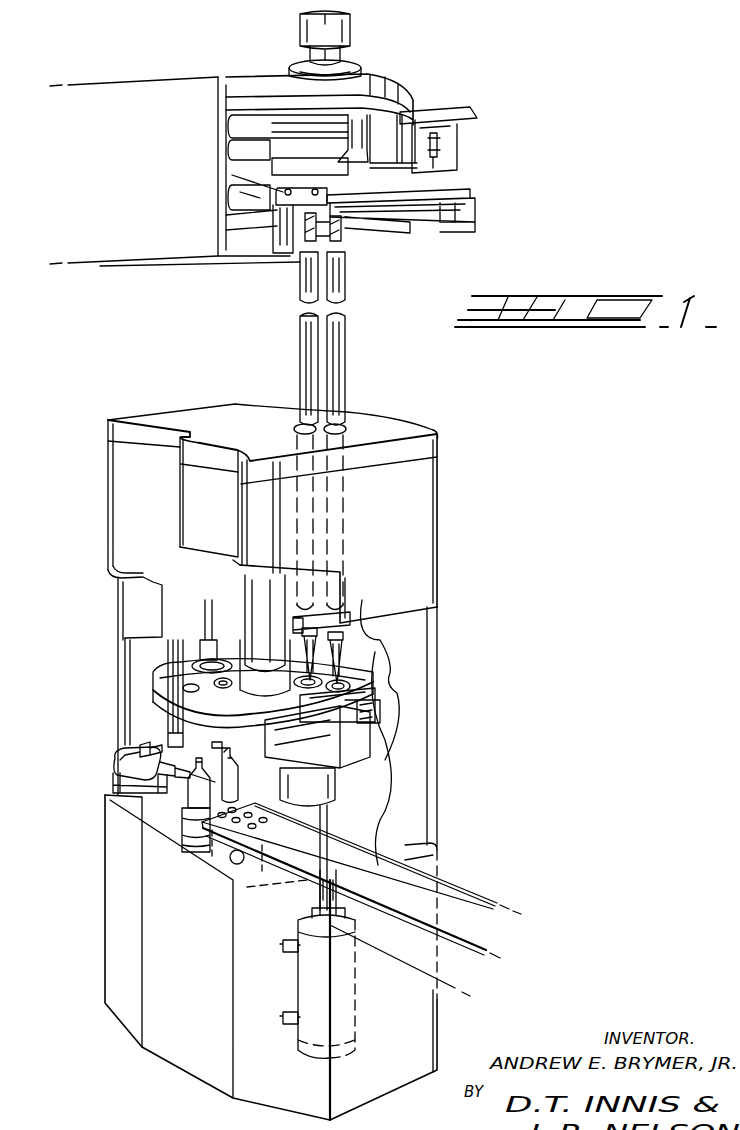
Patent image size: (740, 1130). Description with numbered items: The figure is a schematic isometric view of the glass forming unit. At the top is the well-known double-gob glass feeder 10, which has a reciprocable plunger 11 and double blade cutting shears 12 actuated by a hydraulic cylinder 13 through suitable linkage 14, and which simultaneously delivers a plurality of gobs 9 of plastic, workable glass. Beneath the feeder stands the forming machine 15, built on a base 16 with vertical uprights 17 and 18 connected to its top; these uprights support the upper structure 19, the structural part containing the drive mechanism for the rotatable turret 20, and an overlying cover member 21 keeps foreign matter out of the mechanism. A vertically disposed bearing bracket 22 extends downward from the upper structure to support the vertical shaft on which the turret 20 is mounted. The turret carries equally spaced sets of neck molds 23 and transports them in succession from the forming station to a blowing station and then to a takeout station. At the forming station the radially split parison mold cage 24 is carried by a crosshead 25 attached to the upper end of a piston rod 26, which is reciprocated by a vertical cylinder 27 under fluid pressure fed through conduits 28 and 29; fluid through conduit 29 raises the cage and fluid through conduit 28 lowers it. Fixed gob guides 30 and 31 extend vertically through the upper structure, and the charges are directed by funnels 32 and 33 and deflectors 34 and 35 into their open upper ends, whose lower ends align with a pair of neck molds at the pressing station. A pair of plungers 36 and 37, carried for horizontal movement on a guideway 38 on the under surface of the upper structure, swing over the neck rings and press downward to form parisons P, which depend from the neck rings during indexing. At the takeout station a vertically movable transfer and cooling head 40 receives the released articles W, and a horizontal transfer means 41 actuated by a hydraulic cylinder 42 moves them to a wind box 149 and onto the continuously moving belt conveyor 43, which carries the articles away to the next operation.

The gobs 9 is at (325, 237).
The glass feeder 10 is at (118, 184).
The reciprocable plunger 11 is at (345, 27).
The double blade cutting shears 12 is at (285, 190).
The hydraulic cylinder 13 is at (432, 170).
The linkage 14 is at (475, 196).
The forming machine 15 is at (93, 529).
The base 16 is at (122, 908).
The vertical upright 17 is at (125, 640).
The vertical upright 18 is at (418, 722).
The upper structure 19 is at (430, 540).
The rotatable turret 20 is at (375, 690).
The cover member 21 is at (425, 452).
The bearing bracket 22 is at (276, 592).
The neck molds 23 is at (463, 667).
The parison mold cage 24 is at (355, 735).
The crosshead 25 is at (352, 772).
The piston rod 26 is at (365, 838).
The vertical cylinder 27 is at (340, 1008).
The conduit 28 is at (285, 942).
The conduit 29 is at (286, 1014).
The gob guide 30 is at (338, 535).
The gob guide 31 is at (305, 516).
The funnel 32 is at (343, 284).
The funnel 33 is at (302, 284).
The deflector 34 is at (336, 372).
The deflector 35 is at (303, 362).
The plunger 36 is at (365, 660).
The plunger 37 is at (340, 655).
The guideway 38 is at (300, 622).
The transfer and cooling head 40 is at (182, 830).
The horizontal transfer means 41 is at (190, 808).
The hydraulic cylinder 42 is at (125, 762).
The belt conveyor 43 is at (270, 860).
The wind box 149 is at (218, 840).
The parisons P is at (302, 745).
The articles W is at (138, 752).